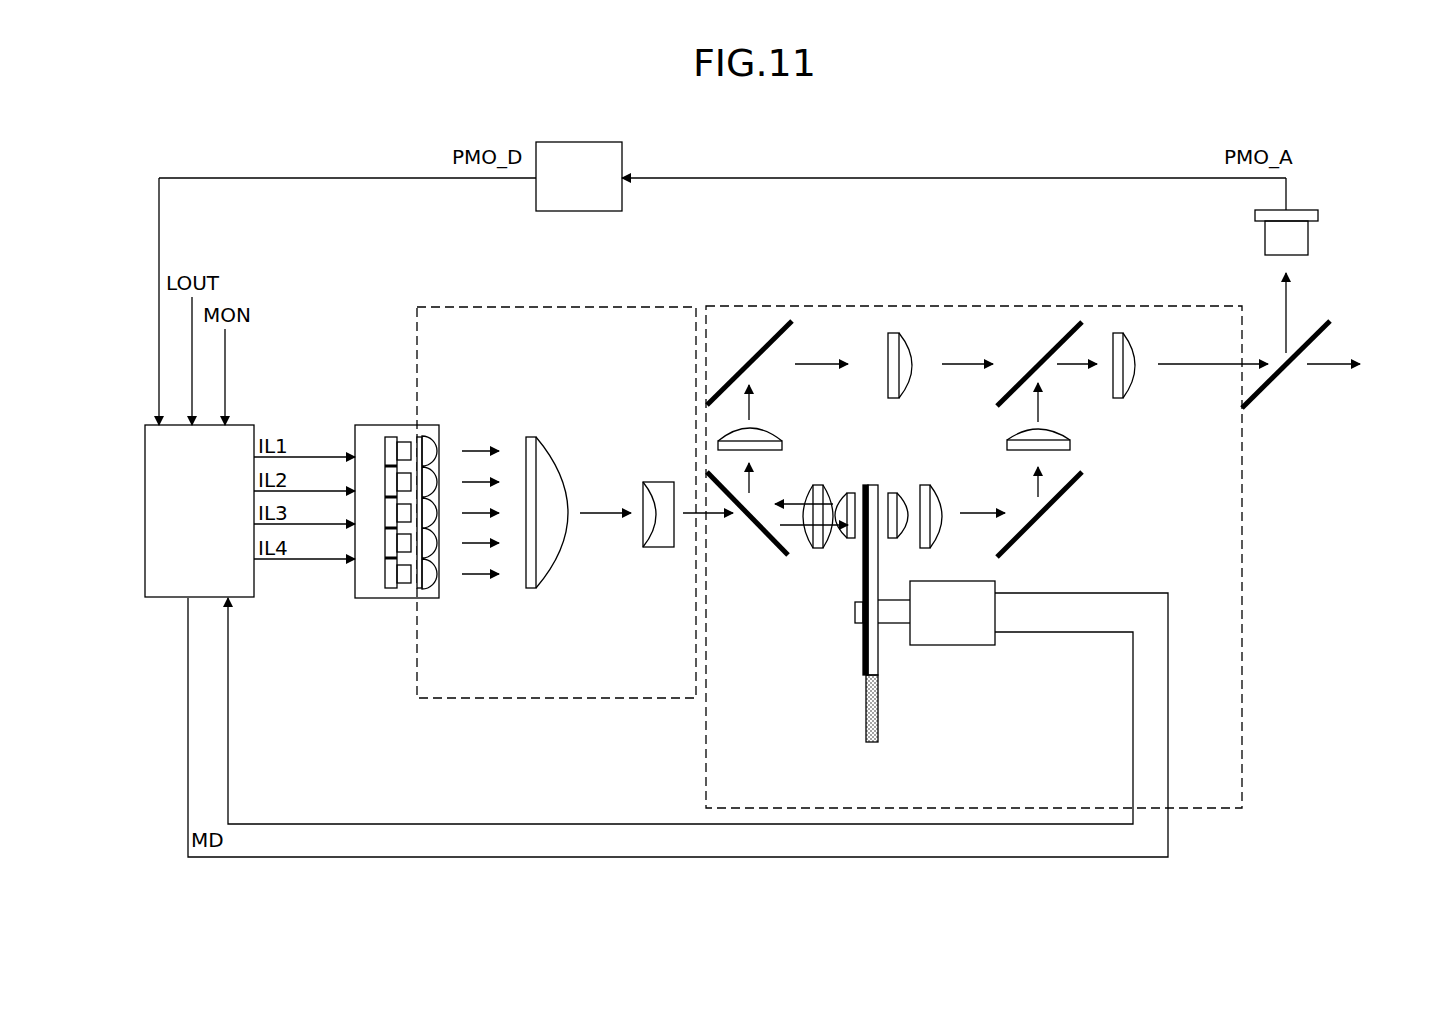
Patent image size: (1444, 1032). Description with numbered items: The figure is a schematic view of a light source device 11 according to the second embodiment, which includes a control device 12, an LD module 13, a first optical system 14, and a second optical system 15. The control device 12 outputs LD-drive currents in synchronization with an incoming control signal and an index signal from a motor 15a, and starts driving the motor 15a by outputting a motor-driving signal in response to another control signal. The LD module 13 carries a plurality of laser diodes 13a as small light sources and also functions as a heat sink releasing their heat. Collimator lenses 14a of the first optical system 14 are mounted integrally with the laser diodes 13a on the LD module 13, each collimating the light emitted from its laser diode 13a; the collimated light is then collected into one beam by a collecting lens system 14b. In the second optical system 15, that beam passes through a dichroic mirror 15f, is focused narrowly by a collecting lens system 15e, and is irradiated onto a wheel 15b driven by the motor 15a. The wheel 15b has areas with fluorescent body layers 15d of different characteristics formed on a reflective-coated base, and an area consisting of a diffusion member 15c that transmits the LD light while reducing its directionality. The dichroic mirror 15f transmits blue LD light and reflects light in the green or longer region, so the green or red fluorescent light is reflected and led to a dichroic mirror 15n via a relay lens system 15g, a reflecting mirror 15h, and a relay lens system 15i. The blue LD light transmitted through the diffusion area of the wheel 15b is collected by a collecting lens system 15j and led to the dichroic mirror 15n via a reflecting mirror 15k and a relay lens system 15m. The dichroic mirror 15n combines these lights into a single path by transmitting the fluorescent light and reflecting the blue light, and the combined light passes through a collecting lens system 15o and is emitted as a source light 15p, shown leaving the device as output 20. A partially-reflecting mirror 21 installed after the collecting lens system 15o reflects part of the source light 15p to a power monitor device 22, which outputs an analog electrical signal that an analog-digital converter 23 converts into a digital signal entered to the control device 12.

The light source device 11 is at (962, 154).
The control device 12 is at (155, 598).
The LD module 13 is at (384, 516).
The laser diode 13a is at (391, 437).
The first optical system 14 is at (556, 474).
The collimator lens 14a is at (426, 437).
The collecting lens system 14b is at (687, 603).
The second optical system 15 is at (987, 593).
The motor 15a is at (945, 645).
The wheel 15b is at (880, 665).
The diffusion member 15c is at (866, 715).
The fluorescent body layer 15d is at (863, 640).
The collecting lens system 15e is at (857, 563).
The dichroic mirror 15f is at (762, 532).
The relay lens system 15g is at (782, 434).
The reflecting mirror 15h is at (739, 375).
The relay lens system 15i is at (905, 336).
The collecting lens system 15j is at (945, 477).
The reflecting mirror 15k is at (1017, 540).
The relay lens system 15m is at (1072, 445).
The dichroic mirror 15n is at (1050, 345).
The collecting lens system 15o is at (1134, 335).
The source light 15p is at (1196, 365).
The output light to projection optics 20 is at (1342, 362).
The partially-reflecting mirror 21 is at (1318, 325).
The PMD (Power Monitor Device) 22 is at (1320, 212).
The ADC (Analog-Digital Converter) 23 is at (622, 152).